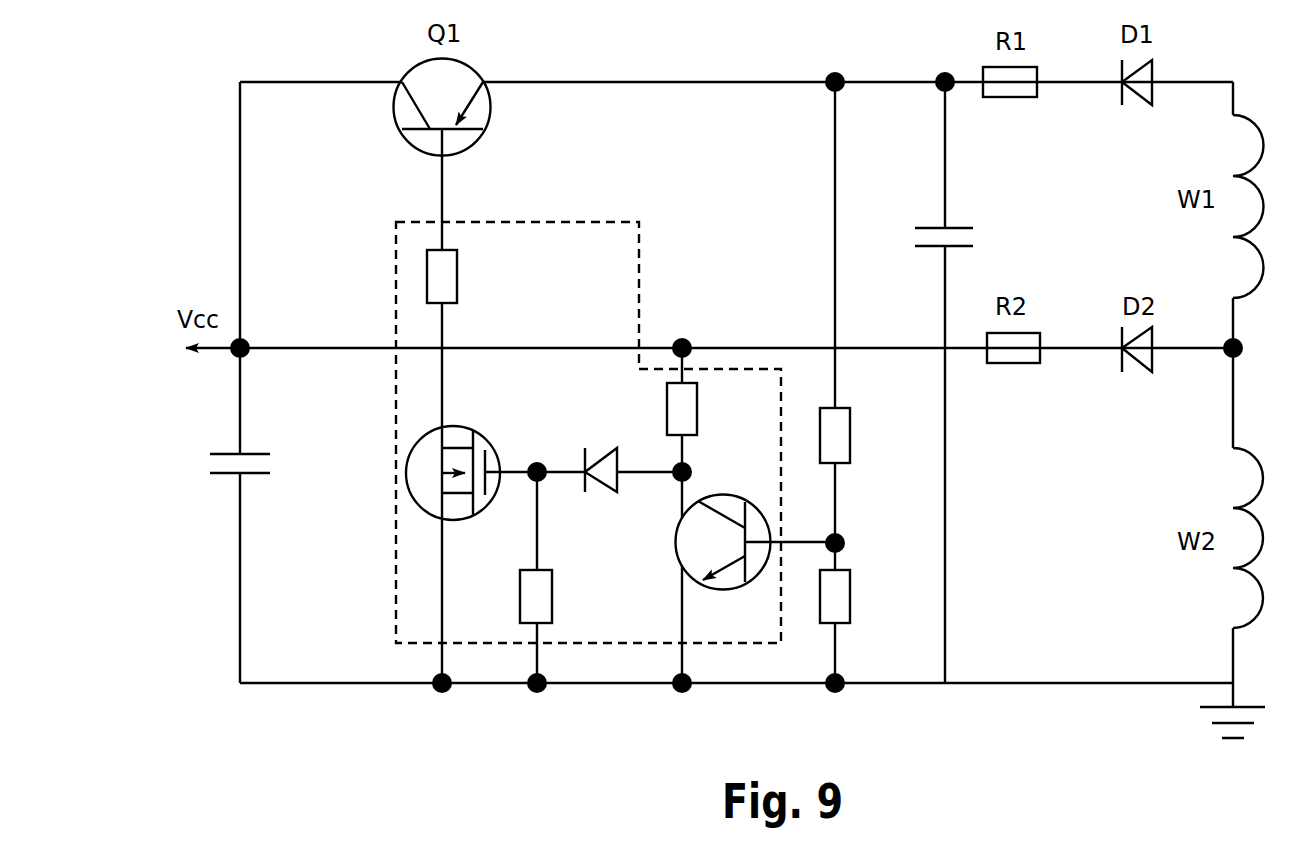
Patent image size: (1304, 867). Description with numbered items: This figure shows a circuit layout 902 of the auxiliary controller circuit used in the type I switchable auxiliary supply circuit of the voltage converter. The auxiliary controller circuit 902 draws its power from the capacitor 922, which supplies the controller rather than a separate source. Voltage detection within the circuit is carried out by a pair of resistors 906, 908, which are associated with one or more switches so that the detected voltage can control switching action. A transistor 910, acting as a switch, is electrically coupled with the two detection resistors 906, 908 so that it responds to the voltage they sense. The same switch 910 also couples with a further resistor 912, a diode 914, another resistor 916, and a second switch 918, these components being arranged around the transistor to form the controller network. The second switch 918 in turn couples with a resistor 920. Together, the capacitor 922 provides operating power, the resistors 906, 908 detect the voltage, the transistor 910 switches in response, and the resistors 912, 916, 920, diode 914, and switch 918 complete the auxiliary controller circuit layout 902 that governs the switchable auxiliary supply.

The circuit layout 902 is at (615, 221).
The resistor R3 906 is at (862, 419).
The resistor R4 908 is at (862, 581).
The transistor Q2 910 is at (990, 238).
The resistor R5 912 is at (708, 400).
The diode D3 914 is at (605, 411).
The resistor R7 916 is at (567, 565).
The switch Q3 918 is at (468, 408).
The resistor R6 920 is at (509, 283).
The capacitor C2 922 is at (288, 413).